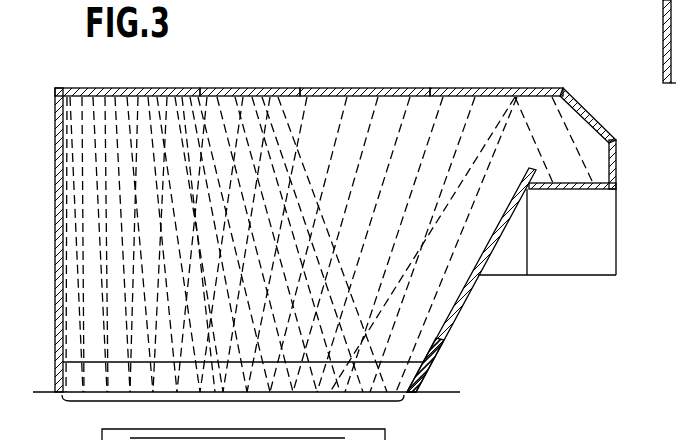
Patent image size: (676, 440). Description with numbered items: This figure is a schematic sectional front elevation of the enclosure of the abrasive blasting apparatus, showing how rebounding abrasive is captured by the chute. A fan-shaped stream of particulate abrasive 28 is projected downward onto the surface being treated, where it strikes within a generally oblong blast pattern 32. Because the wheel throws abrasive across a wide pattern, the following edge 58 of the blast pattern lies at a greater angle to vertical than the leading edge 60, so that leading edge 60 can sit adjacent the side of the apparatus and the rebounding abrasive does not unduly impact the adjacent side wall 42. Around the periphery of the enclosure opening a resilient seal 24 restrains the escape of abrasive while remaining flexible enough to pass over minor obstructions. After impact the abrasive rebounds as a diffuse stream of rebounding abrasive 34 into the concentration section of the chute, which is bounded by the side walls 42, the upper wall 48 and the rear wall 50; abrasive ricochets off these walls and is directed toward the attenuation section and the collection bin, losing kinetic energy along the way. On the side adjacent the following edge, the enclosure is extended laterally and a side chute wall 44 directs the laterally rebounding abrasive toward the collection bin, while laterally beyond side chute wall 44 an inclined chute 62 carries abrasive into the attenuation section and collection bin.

The resilient seal 24 is at (423, 378).
The stream of particulate abrasive 28 is at (233, 90).
The blast pattern 32 is at (240, 401).
The stream of rebounding abrasive 34 is at (484, 90).
The side walls 42 is at (55, 238).
The side chute wall 44 is at (458, 316).
The upper wall 48 is at (374, 90).
The rear wall 50 is at (143, 90).
The following edge of the blast pattern 58 is at (422, 395).
The leading edge of the blast pattern 60 is at (73, 307).
The inclined chute 62 is at (608, 233).